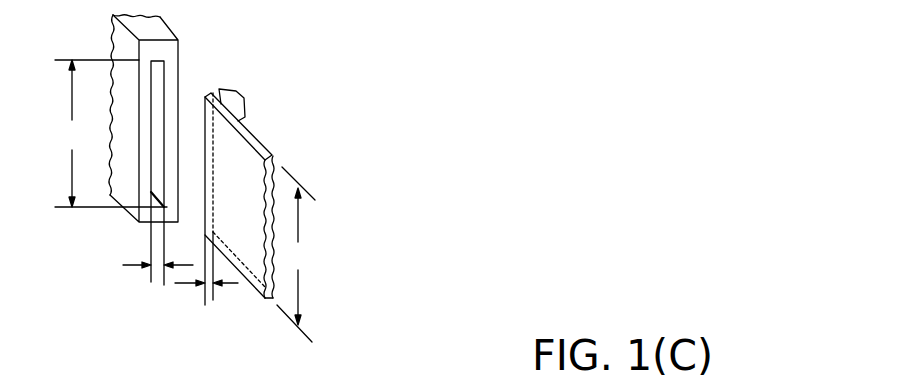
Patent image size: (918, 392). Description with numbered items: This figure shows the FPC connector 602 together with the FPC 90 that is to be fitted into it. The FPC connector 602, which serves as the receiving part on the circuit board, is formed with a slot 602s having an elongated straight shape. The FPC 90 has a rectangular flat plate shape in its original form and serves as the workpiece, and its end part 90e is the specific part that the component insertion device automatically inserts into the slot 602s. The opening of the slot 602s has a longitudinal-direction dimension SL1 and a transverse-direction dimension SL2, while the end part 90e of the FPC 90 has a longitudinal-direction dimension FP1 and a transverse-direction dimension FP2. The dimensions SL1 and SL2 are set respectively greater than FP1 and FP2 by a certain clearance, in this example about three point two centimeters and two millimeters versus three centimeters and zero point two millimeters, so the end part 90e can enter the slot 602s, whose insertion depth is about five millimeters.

The FPC connector 602 is at (165, 25).
The slot 602s is at (160, 72).
The FPC 90 is at (265, 150).
The end part 90e is at (237, 99).
The longitudinal-direction dimension of the slot opening SL1 is at (110, 133).
The transverse-direction dimension of the slot opening SL2 is at (160, 278).
The longitudinal-direction dimension of the end part FP1 is at (299, 254).
The transverse-direction dimension of the end part FP2 is at (212, 293).